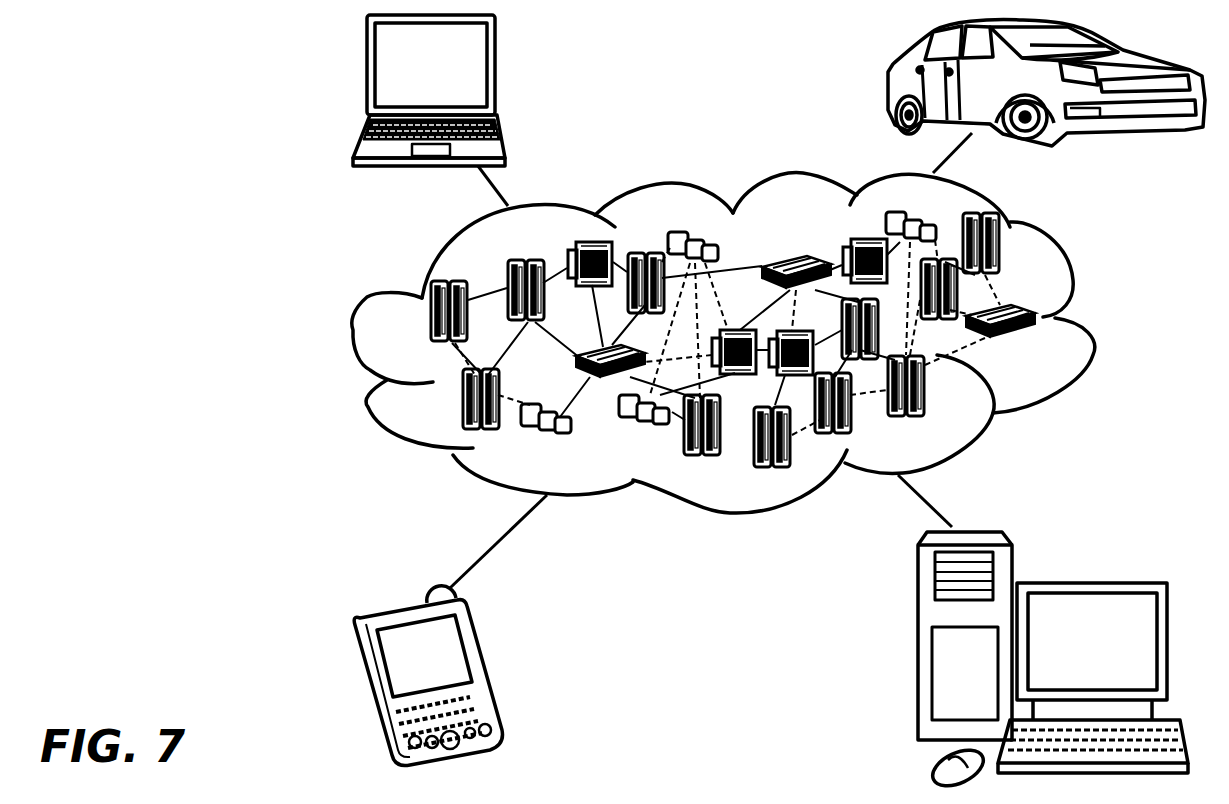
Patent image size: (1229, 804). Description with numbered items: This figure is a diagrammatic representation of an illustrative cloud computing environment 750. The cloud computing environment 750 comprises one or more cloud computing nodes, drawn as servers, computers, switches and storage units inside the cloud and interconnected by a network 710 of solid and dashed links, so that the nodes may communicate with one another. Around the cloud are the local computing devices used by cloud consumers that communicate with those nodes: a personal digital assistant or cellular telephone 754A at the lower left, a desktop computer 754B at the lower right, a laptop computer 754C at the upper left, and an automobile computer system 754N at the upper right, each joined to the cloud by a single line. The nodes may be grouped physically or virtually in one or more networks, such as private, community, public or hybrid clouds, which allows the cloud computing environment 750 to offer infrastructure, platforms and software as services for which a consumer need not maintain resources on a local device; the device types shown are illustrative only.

The network 710 is at (1034, 347).
The cloud computing environment 750 is at (1090, 320).
The personal digital assistant or cellular telephone 754A is at (487, 668).
The desktop computer 754B is at (1092, 583).
The laptop computer 754C is at (497, 70).
The automobile computer system 754N is at (890, 85).